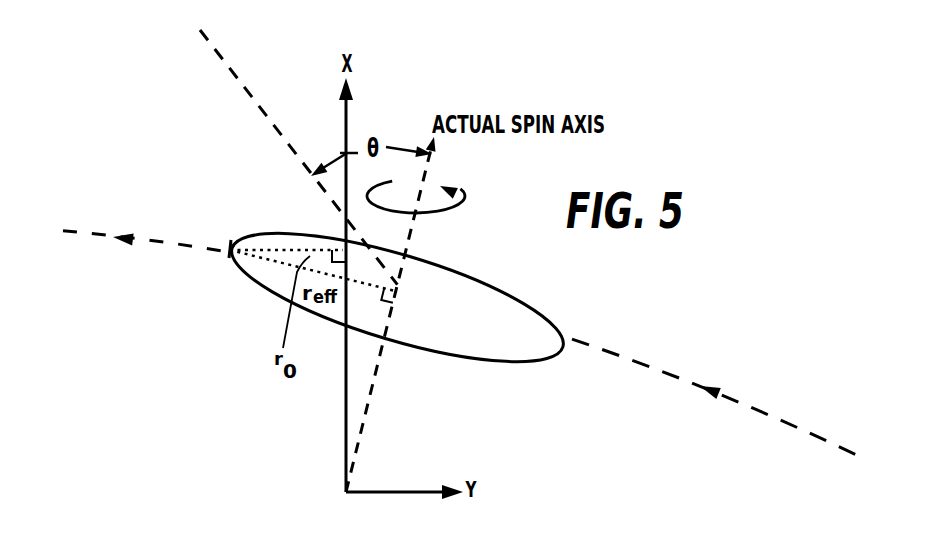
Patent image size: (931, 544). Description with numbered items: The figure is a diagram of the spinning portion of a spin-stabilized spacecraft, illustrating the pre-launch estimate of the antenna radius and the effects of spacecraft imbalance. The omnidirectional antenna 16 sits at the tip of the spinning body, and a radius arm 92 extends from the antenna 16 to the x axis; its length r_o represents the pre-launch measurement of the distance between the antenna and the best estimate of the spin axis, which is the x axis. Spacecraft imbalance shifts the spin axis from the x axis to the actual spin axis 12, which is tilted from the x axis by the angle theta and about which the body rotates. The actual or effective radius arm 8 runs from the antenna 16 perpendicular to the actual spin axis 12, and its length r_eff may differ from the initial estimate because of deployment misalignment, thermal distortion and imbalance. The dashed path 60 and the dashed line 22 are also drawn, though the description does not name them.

The radius arm 8 is at (298, 264).
The actual spin axis 12 is at (412, 231).
The omnidirectional antenna 16 is at (228, 248).
The line of sight 22 is at (227, 66).
The trajectory 60 is at (117, 241).
The radius arm 92 is at (275, 248).